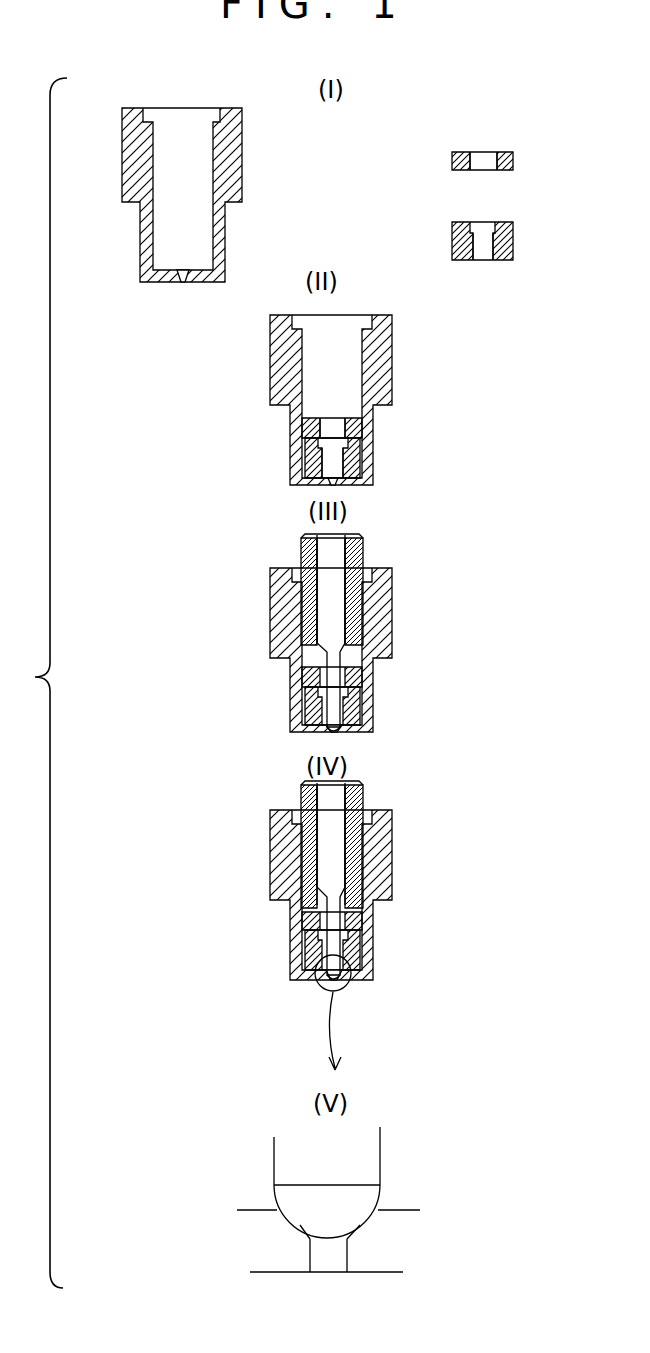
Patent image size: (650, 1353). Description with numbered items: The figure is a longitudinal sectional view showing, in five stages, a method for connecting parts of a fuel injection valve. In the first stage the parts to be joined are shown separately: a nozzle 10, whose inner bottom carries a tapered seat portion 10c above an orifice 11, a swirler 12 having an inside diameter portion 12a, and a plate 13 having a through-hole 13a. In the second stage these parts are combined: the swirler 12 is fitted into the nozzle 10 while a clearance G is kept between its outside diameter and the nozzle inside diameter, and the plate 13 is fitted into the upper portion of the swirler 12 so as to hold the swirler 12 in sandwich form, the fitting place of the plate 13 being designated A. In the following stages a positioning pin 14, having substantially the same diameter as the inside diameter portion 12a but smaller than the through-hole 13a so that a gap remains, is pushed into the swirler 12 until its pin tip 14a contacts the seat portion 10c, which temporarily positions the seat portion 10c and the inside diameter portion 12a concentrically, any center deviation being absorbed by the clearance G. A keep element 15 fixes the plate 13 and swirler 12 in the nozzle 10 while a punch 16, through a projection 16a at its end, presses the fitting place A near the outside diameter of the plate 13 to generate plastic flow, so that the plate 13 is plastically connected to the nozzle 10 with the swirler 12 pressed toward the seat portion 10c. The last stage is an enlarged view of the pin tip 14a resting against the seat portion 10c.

The nozzle 10 is at (238, 148).
The seat portion 10c is at (188, 272).
The orifice 11 is at (182, 283).
The swirler 12 is at (500, 222).
The inside diameter portion 12a is at (483, 258).
The plate 13 is at (505, 154).
The through-hole 13a is at (482, 153).
The positioning pin 14 is at (330, 558).
The pin tip 14a is at (340, 732).
The keep element 15 is at (305, 541).
The punch 16 is at (305, 566).
The projection 16a is at (305, 626).
The fitting place A is at (310, 431).
The clearance G is at (304, 461).